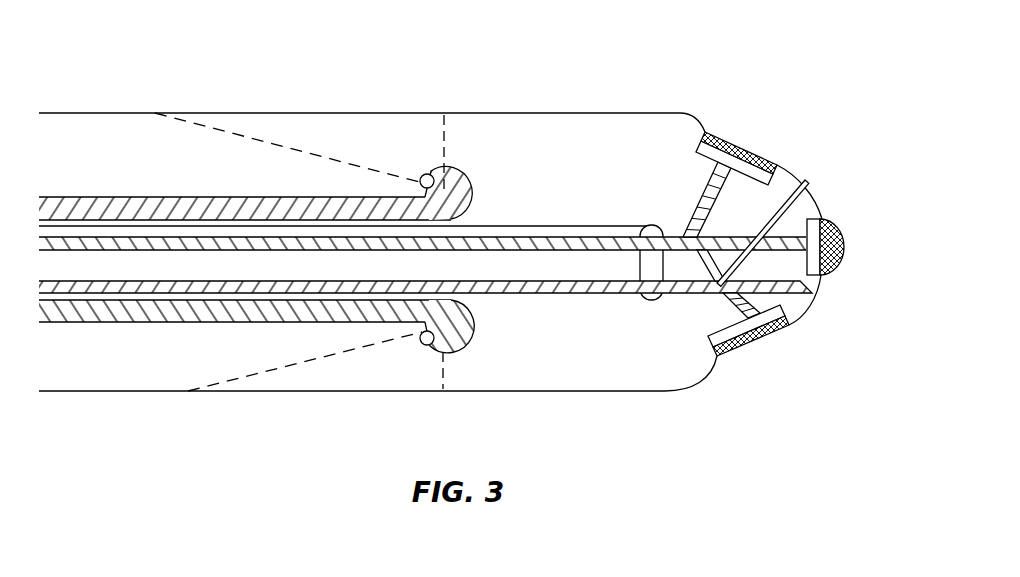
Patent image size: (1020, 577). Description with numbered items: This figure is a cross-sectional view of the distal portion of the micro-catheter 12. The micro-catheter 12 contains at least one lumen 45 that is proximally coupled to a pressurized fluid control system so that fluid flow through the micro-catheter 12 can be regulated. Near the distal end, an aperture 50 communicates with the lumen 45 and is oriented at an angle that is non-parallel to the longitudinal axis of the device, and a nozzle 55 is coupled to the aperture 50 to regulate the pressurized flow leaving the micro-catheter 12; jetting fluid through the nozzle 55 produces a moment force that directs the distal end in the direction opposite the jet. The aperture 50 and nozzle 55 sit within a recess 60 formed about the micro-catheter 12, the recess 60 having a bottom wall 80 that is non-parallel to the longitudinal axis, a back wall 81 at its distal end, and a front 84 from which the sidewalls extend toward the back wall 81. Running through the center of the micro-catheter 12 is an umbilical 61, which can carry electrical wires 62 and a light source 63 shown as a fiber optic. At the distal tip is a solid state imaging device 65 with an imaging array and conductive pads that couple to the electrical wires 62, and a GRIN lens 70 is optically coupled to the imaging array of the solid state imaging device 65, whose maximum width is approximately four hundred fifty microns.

The micro-catheter 12 is at (94, 365).
The lumen 45 is at (108, 210).
The aperture 50 is at (421, 178).
The nozzle 55 is at (436, 170).
The recess 60 is at (347, 135).
The umbilical 61 is at (520, 227).
The electrical wires 62 is at (547, 237).
The light source 63 is at (570, 290).
The solid state imaging device 65 is at (728, 132).
The GRIN lens 70 is at (745, 138).
The bottom wall 80 is at (270, 148).
The back wall 81 is at (445, 133).
The front 84 is at (205, 86).